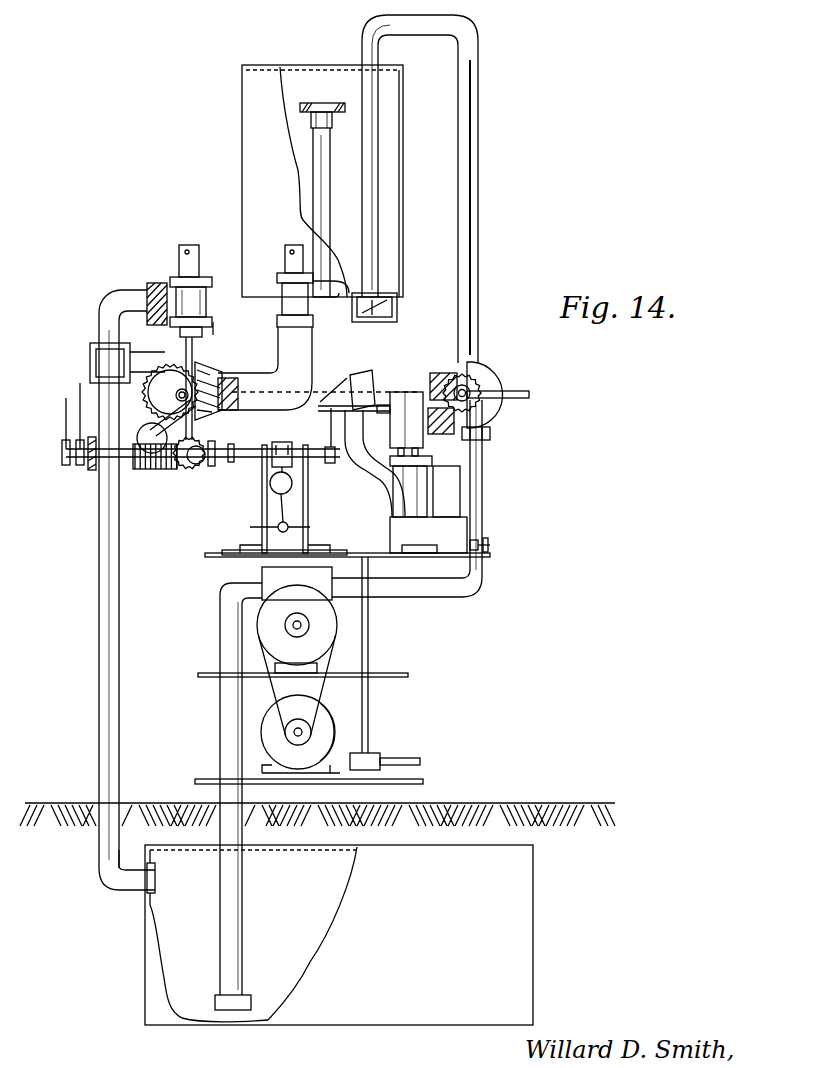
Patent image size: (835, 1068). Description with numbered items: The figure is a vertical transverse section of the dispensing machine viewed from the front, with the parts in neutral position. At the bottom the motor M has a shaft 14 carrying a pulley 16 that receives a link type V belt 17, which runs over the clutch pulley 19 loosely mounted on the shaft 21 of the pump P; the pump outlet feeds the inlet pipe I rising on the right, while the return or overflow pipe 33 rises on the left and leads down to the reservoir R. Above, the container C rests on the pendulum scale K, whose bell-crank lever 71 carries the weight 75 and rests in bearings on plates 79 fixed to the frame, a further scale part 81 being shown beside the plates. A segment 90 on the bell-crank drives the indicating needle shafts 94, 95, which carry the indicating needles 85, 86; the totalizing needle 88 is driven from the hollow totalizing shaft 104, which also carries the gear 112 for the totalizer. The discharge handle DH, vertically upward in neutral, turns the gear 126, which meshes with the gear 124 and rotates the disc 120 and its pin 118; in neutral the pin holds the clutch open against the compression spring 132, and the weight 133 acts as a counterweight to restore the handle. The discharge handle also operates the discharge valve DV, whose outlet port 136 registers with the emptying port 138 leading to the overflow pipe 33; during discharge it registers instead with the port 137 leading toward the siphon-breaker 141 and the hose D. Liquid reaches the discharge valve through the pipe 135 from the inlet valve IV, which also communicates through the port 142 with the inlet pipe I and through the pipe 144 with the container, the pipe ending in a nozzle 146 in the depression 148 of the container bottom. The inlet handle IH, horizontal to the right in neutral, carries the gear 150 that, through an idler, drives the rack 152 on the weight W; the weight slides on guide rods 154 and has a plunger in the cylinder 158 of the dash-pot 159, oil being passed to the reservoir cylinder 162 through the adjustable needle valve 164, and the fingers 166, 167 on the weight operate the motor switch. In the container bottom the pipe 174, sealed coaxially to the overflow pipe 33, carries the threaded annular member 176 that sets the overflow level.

The shaft 14 is at (302, 730).
The pulley 16 is at (295, 742).
The link type V belt 17 is at (270, 695).
The clutch pulley 19 is at (320, 632).
The pump shaft 21 is at (290, 626).
The overflow pipe 33 is at (99, 689).
The bell-crank lever 71 is at (270, 455).
The weight 75 is at (292, 486).
The plates 79 is at (308, 513).
The pivot link 81 is at (290, 533).
The indicating needle 85 is at (64, 443).
The indicating needle 86 is at (345, 433).
The totalizing needle 88 is at (80, 396).
The segment 90 is at (280, 442).
The indicating needle shaft 94 is at (258, 456).
The indicating needle shaft 95 is at (330, 450).
The hollow totalizing shaft 104 is at (110, 455).
The gear 112 is at (88, 465).
The pin 118 is at (188, 470).
The disc 120 is at (214, 440).
The gear 124 is at (194, 465).
The gear 126 is at (170, 370).
The compression spring 132 is at (150, 470).
The weight 133 is at (140, 430).
The pipe 135 is at (318, 400).
The outlet port 136 is at (163, 396).
The port 137 is at (197, 277).
The emptying port 138 is at (198, 340).
The siphon-breaker 141 is at (190, 245).
The port 142 is at (432, 390).
The pipe 144 is at (480, 268).
The nozzle 146 is at (383, 300).
The depression 148 is at (398, 316).
The gear 150 is at (492, 409).
The rack 152 is at (454, 430).
The guide rods 154 is at (432, 462).
The cylinder 158 is at (420, 482).
The dash-pot 159 is at (453, 553).
The reservoir cylinder 162 is at (452, 505).
The adjustable needle valve 164 is at (490, 547).
The finger 166 is at (383, 470).
The finger 167 is at (362, 375).
The pipe 174 is at (313, 165).
The annular member 176 is at (345, 110).
The container C is at (322, 181).
The hose D is at (400, 302).
The discharge handle DH is at (213, 325).
The discharge valve DV is at (224, 376).
The inlet pipe I is at (483, 493).
The inlet handle IH is at (520, 392).
The inlet valve IV is at (470, 382).
The scale K is at (300, 447).
The motor M is at (335, 735).
The pump P is at (262, 577).
The reservoir R is at (339, 935).
The weight W is at (406, 420).